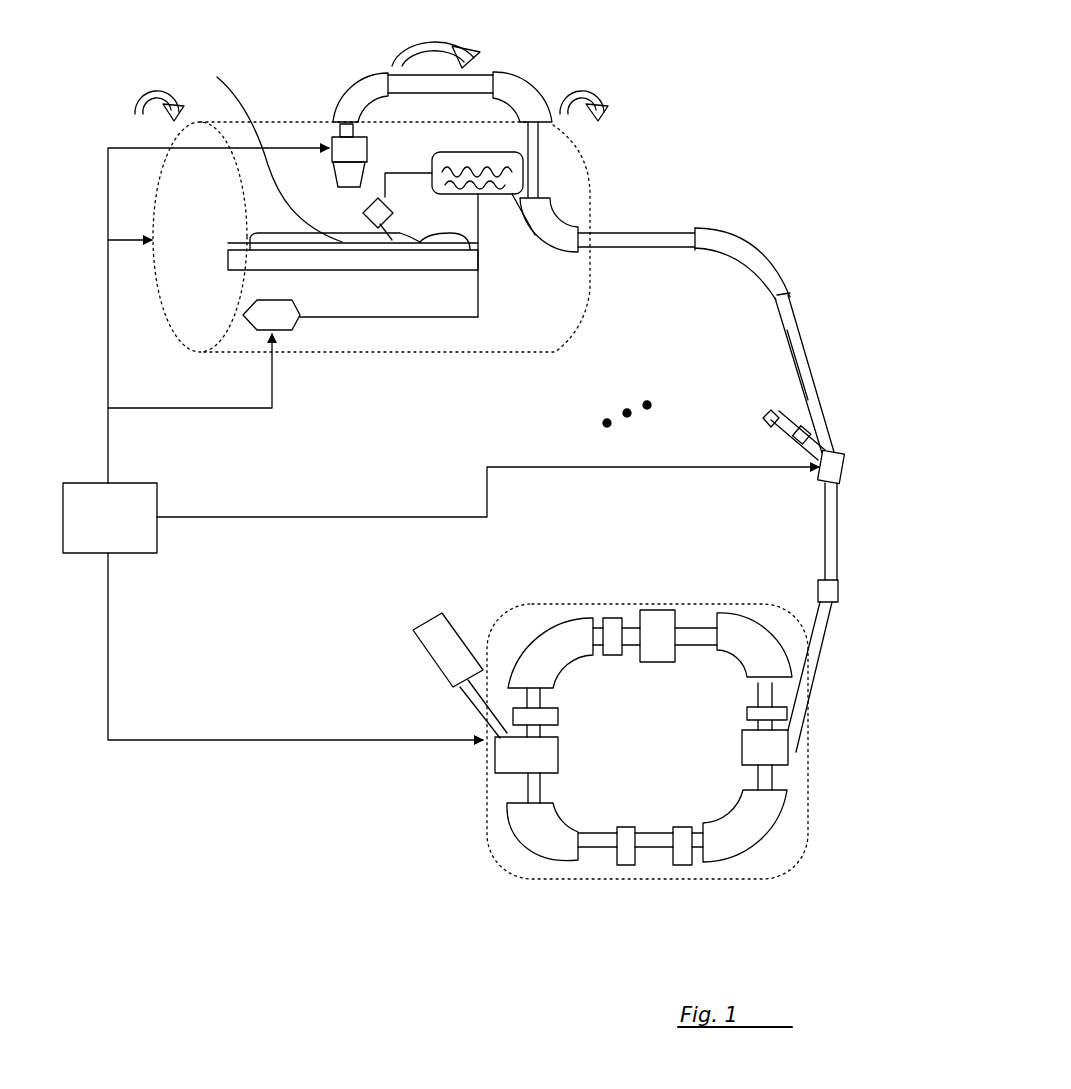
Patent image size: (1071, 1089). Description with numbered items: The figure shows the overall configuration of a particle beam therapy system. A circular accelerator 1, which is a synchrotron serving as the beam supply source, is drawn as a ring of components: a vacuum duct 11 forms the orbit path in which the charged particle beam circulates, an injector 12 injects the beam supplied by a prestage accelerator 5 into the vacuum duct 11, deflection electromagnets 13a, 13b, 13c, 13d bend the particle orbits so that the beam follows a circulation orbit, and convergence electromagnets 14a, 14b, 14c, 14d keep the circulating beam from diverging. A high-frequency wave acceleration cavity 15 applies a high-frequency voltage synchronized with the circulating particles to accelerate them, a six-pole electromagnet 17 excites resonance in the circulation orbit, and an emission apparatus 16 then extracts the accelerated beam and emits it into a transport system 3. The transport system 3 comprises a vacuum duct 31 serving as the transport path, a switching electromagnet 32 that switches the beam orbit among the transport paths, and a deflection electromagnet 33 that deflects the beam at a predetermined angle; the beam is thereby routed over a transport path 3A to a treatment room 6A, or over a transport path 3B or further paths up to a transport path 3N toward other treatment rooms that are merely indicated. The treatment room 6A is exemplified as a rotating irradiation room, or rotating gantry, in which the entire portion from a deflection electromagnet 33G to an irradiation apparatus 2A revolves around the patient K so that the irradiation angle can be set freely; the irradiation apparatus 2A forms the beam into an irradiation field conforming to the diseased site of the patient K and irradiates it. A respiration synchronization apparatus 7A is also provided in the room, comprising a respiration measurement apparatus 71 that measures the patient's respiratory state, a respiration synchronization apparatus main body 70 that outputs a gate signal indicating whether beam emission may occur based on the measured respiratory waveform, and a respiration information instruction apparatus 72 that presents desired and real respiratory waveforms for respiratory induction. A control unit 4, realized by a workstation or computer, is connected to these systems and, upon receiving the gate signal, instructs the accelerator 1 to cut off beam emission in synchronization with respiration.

The circular accelerator 1 is at (485, 757).
The irradiation apparatus 2A is at (327, 146).
The transport system 3 is at (837, 558).
The transport path 3A is at (798, 380).
The transport path 3B is at (740, 428).
The transport path 3N is at (611, 423).
The control unit 4 is at (157, 537).
The prestage accelerator 5 is at (452, 668).
The treatment room 6A is at (555, 298).
The respiration synchronization apparatus 7A is at (443, 398).
The vacuum duct 11 is at (528, 780).
The injector 12 is at (518, 763).
The deflection electromagnet 13a is at (547, 835).
The deflection electromagnet 13b is at (757, 825).
The deflection electromagnet 13c is at (740, 637).
The deflection electromagnet 13d is at (565, 635).
The convergence electromagnet 14a is at (692, 867).
The convergence electromagnet 14b is at (807, 703).
The convergence electromagnet 14c is at (610, 620).
The convergence electromagnet 14d is at (502, 626).
The high-frequency wave acceleration cavity 15 is at (660, 620).
The emission apparatus 16 is at (807, 755).
The six-pole electromagnet 17 is at (630, 867).
The vacuum duct 31 is at (807, 362).
The switching electromagnet 32 is at (846, 464).
The deflection electromagnet 33 is at (345, 95).
The deflection electromagnet 33G is at (558, 216).
The respiration synchronization apparatus main body 70 is at (290, 325).
The respiration measurement apparatus 71 is at (393, 267).
The respiration information instruction apparatus 72 is at (498, 196).
The patient K is at (268, 151).